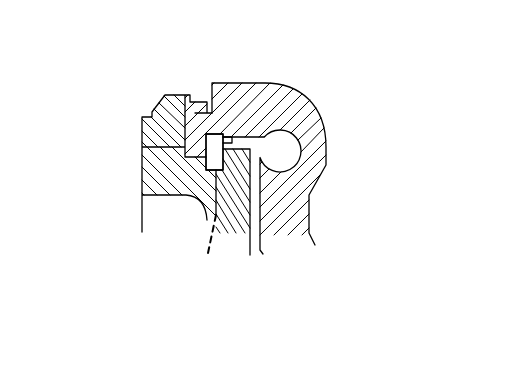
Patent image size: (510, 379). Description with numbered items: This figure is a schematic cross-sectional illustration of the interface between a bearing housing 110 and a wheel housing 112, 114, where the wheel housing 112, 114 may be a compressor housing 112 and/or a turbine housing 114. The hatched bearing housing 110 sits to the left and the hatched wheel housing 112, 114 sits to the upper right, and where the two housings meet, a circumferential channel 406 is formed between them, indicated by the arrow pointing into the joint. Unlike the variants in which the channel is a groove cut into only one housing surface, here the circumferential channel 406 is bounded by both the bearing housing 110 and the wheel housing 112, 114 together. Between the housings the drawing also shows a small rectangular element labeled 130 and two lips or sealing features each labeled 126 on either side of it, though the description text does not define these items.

The bearing housing 110 is at (162, 114).
The compressor housing 112 is at (263, 138).
The turbine housing 114 is at (262, 97).
The seal 126 is at (206, 139).
The insert 130 is at (232, 133).
The circumferential channel 406 is at (366, 101).